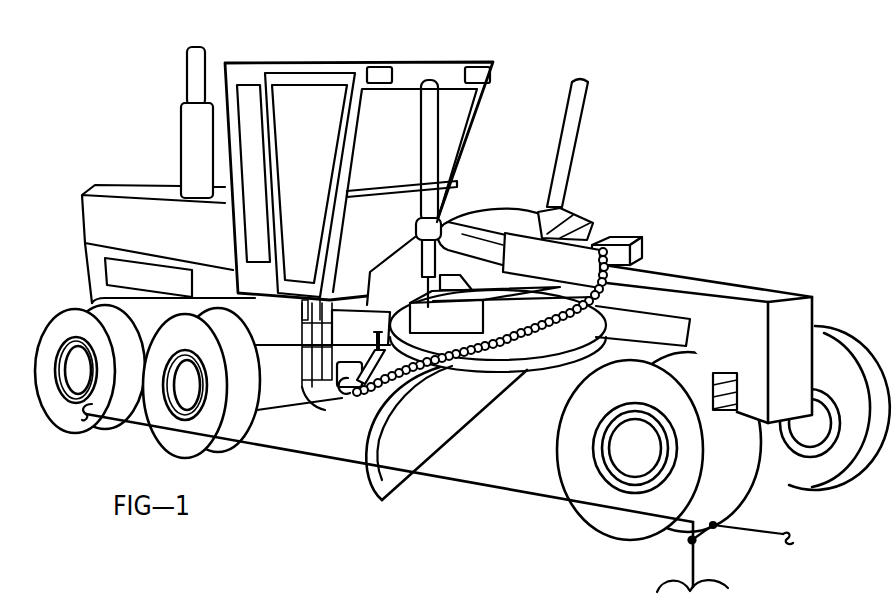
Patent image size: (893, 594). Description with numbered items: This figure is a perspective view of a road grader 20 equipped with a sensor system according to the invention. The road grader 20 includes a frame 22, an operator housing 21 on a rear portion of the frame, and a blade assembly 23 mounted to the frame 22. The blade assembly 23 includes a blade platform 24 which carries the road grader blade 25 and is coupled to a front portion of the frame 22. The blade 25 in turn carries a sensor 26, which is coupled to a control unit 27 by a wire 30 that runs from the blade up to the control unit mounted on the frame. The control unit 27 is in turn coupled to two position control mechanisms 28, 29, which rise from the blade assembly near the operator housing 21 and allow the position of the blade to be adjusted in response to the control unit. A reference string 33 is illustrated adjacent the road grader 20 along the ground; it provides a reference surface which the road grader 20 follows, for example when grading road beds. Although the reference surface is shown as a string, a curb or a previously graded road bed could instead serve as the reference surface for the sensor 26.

The road grader 20 is at (720, 153).
The operator housing 21 is at (433, 60).
The frame 22 is at (737, 278).
The blade assembly 23 is at (490, 428).
The blade platform 24 is at (568, 370).
The road grader blade 25 is at (373, 487).
The sensor 26 is at (335, 388).
The control unit 27 is at (628, 234).
The position control mechanism 28 is at (425, 138).
The position control mechanism 29 is at (593, 83).
The wire 30 is at (360, 398).
The reference string 33 is at (512, 497).